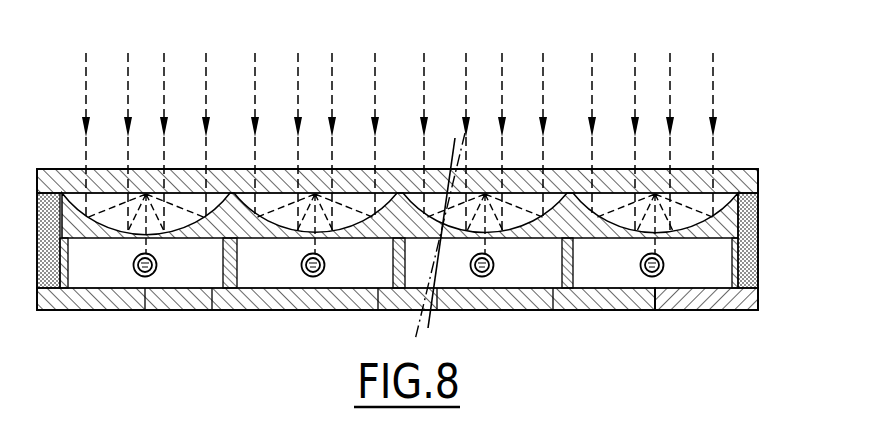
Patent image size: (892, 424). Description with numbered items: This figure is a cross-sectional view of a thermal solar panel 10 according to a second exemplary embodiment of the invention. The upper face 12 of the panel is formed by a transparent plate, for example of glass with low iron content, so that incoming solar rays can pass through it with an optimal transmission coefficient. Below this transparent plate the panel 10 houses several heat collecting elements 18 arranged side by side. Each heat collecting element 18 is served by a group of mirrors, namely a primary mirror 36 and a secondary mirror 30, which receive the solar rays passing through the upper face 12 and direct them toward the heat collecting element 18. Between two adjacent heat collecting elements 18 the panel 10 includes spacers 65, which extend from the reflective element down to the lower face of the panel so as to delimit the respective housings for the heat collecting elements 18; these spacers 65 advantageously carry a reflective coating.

The thermal solar panel 10 is at (741, 126).
The upper face 12 is at (570, 195).
The heat collecting element 18 is at (137, 273).
The secondary mirror 30 is at (477, 196).
The primary mirror 36 is at (533, 204).
The spacer 65 is at (230, 270).